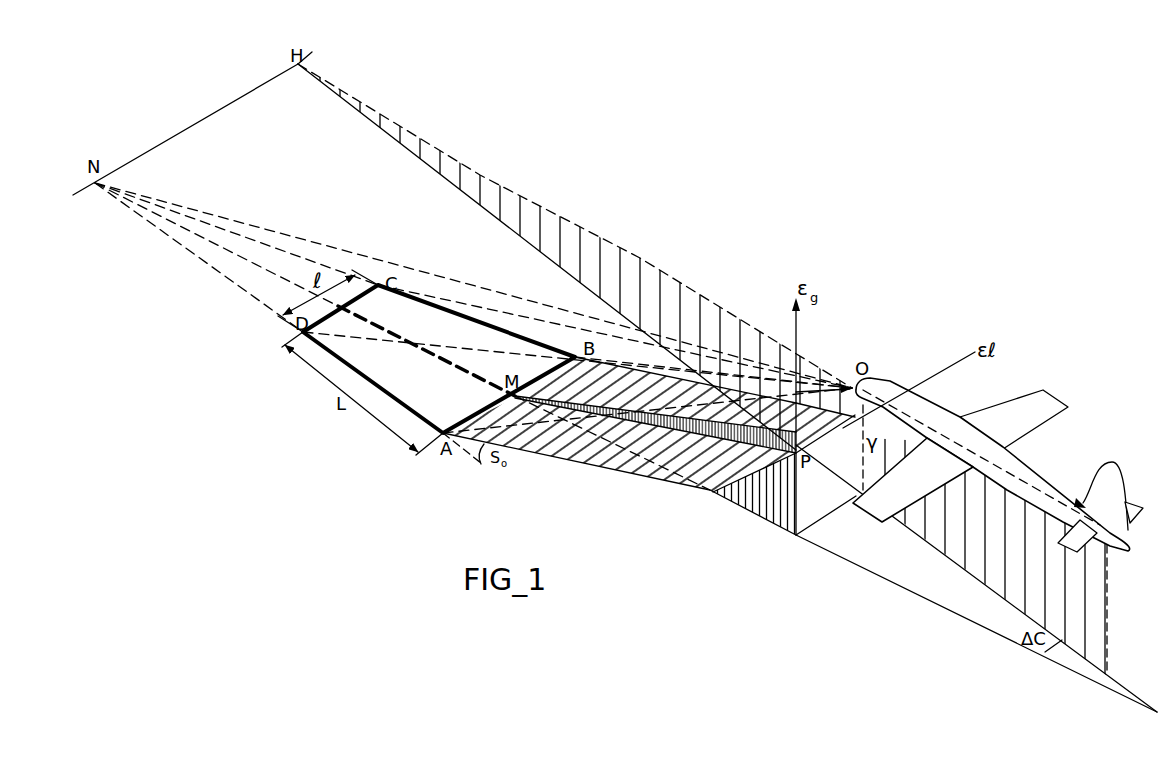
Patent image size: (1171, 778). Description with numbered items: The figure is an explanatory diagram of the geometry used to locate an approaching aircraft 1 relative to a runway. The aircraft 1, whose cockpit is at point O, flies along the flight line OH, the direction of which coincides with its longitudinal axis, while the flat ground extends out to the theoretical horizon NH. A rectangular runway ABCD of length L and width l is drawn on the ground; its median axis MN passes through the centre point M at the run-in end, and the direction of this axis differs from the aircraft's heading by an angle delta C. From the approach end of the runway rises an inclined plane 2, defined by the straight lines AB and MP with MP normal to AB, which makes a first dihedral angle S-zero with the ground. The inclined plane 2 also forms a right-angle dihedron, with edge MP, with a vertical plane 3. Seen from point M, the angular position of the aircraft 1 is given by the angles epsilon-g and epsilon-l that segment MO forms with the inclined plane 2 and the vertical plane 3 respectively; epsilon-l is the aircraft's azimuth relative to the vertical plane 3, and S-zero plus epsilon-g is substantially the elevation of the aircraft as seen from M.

The aircraft 1 is at (998, 528).
The inclined plane 2 is at (800, 534).
The vertical plane 3 is at (753, 494).